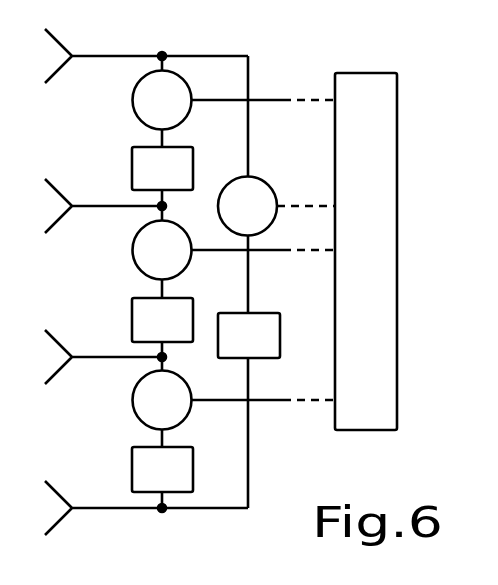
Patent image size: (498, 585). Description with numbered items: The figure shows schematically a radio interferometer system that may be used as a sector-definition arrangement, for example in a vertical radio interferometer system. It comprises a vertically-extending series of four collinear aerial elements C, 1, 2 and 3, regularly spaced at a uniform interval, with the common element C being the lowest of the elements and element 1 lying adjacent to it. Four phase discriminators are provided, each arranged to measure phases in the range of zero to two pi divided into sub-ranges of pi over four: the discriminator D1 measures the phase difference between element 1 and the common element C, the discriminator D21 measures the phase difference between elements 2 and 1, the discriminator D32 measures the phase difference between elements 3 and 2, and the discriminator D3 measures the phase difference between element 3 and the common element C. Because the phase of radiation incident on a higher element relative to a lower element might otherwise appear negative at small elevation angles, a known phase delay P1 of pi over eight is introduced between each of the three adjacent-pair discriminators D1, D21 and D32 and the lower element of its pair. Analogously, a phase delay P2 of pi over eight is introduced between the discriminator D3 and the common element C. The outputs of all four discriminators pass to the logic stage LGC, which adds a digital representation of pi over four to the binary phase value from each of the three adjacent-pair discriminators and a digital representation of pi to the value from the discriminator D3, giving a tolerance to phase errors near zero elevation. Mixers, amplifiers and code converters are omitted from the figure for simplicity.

The aerial element 3 is at (140, 56).
The aerial element 2 is at (99, 206).
The aerial element 1 is at (99, 357).
The common element C is at (137, 508).
The phase discriminator D32 is at (234, 100).
The phase discriminator D21 is at (234, 250).
The phase discriminator D1 is at (234, 400).
The phase discriminator D3 is at (276, 206).
The phase delay P1 is at (162, 319).
The phase delay P2 is at (249, 335).
The logic stage LGC is at (366, 251).